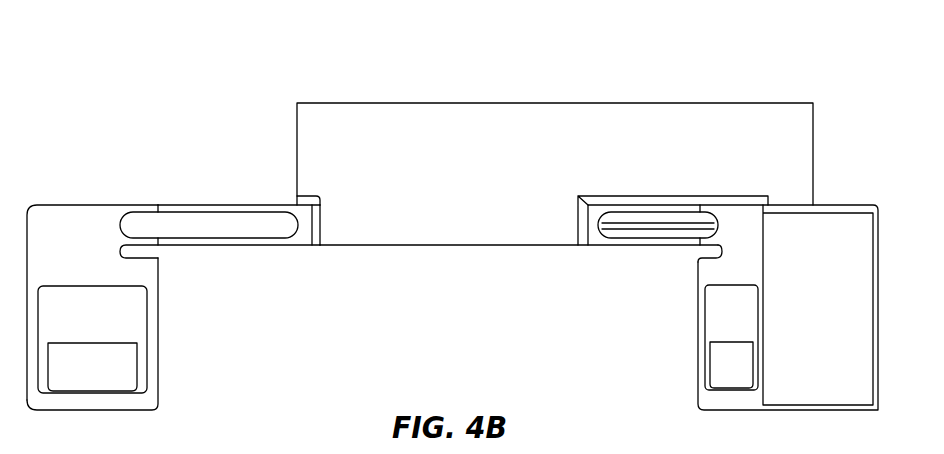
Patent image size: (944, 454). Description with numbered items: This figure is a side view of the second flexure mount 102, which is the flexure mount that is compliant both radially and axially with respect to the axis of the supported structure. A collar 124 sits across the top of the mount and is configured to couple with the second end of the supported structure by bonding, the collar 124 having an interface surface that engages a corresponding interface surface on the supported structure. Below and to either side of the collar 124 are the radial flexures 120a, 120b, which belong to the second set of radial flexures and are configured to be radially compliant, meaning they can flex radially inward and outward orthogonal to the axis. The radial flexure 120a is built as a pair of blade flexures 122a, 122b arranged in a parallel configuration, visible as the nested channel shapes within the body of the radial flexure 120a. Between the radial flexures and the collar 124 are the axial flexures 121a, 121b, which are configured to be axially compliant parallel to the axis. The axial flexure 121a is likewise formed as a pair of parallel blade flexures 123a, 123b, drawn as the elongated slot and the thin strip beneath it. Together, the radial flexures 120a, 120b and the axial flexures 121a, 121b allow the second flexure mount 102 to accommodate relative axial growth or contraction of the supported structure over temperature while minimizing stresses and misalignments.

The second flexure mount 102 is at (306, 32).
The collar 124 is at (312, 122).
The radial flexure 120a is at (172, 352).
The radial flexure 120b is at (675, 333).
The axial flexure 121a is at (222, 190).
The axial flexure 121b is at (644, 263).
The blade flexure 123a is at (207, 208).
The blade flexure 123b is at (230, 242).
The blade flexure 122a is at (37, 320).
The blade flexure 122b is at (153, 330).